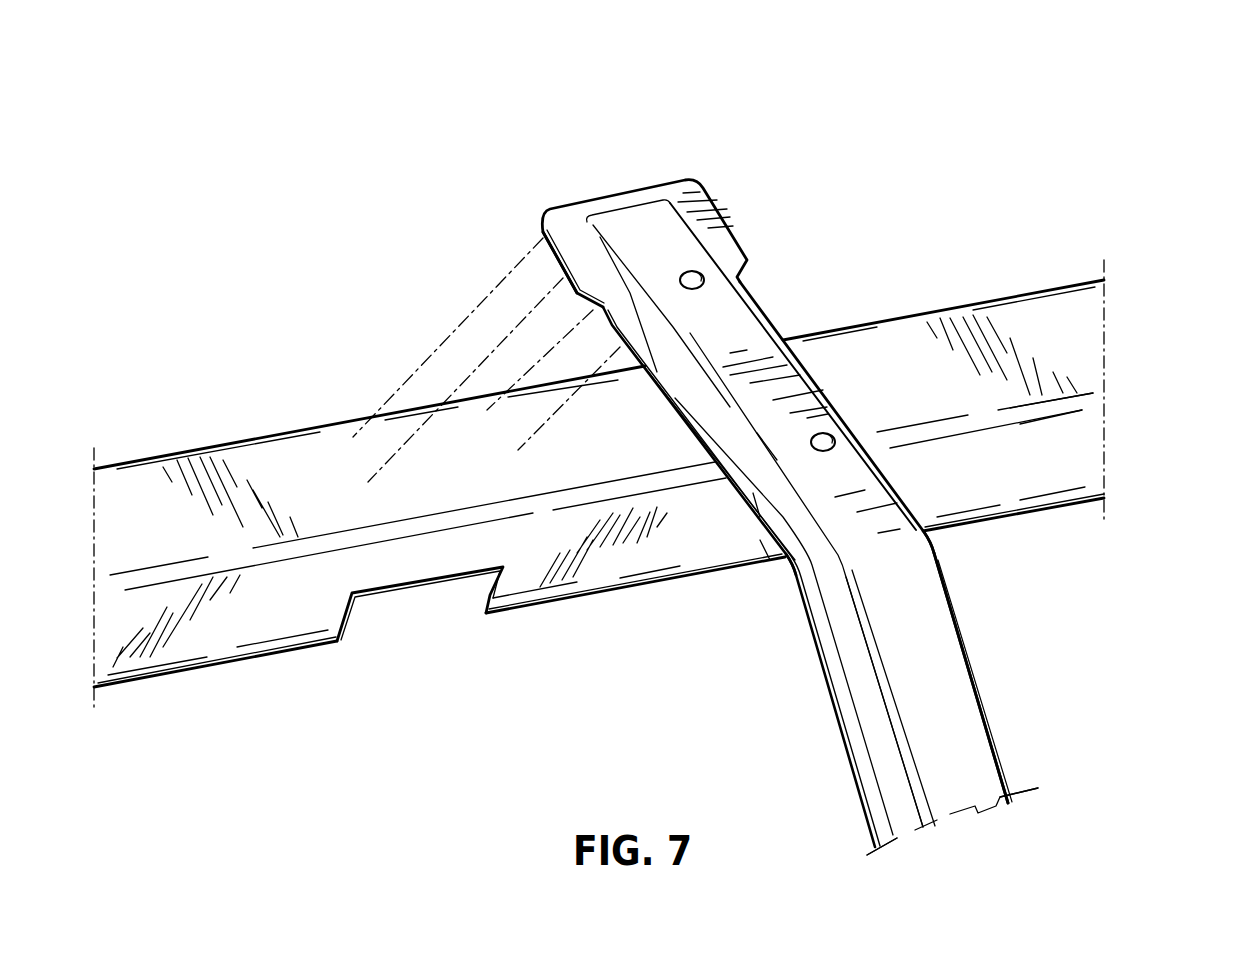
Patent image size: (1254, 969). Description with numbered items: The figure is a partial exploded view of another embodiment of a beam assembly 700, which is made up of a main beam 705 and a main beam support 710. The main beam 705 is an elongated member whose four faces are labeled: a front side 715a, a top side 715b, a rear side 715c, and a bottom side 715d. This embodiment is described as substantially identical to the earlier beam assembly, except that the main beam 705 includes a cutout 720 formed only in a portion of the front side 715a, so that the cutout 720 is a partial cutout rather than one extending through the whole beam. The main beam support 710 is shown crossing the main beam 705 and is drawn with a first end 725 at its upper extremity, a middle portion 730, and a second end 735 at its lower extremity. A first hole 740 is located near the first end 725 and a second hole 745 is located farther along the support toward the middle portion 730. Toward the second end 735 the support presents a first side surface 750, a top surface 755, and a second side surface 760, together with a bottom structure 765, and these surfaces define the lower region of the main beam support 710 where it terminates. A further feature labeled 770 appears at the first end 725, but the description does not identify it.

The beam assembly 700 is at (1020, 102).
The main beam 705 is at (898, 370).
The main beam support 710 is at (842, 600).
The front side 715a is at (1070, 452).
The top side 715b is at (1077, 350).
The rear side 715c is at (993, 290).
The bottom side 715d is at (1058, 512).
The cutout 720 is at (418, 595).
The first end 725 is at (648, 217).
The middle portion 730 is at (910, 532).
The second end 735 is at (953, 743).
The first hole 740 is at (703, 278).
The second hole 745 is at (812, 449).
The first side surface 750 is at (908, 813).
The top surface 755 is at (952, 802).
The second side surface 760 is at (1002, 779).
The bottom structure 765 is at (870, 803).
The tab of flange 770 is at (572, 216).